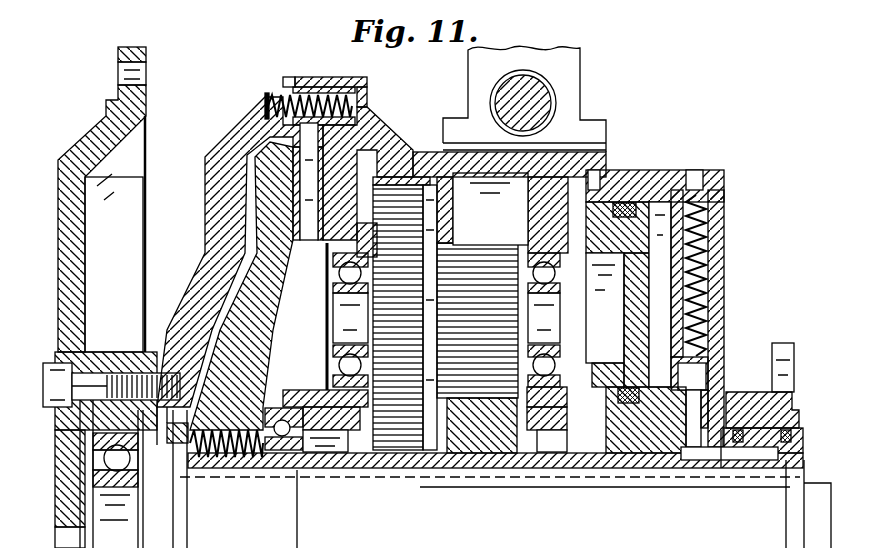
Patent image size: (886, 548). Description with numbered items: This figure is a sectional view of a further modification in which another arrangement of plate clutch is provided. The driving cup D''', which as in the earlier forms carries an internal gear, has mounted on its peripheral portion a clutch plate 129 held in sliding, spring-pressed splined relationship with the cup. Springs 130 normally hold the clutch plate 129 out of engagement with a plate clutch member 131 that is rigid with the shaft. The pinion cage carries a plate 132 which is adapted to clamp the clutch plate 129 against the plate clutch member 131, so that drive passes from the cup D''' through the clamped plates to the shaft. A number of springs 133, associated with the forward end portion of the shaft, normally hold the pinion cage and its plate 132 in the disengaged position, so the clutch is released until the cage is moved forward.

The clutch plate 129 is at (312, 262).
The springs 130 is at (277, 93).
The plate clutch member 131 is at (267, 183).
The plate of the pinion cage 132 is at (345, 157).
The springs 133 is at (212, 456).
The driving cup D''' is at (240, 248).